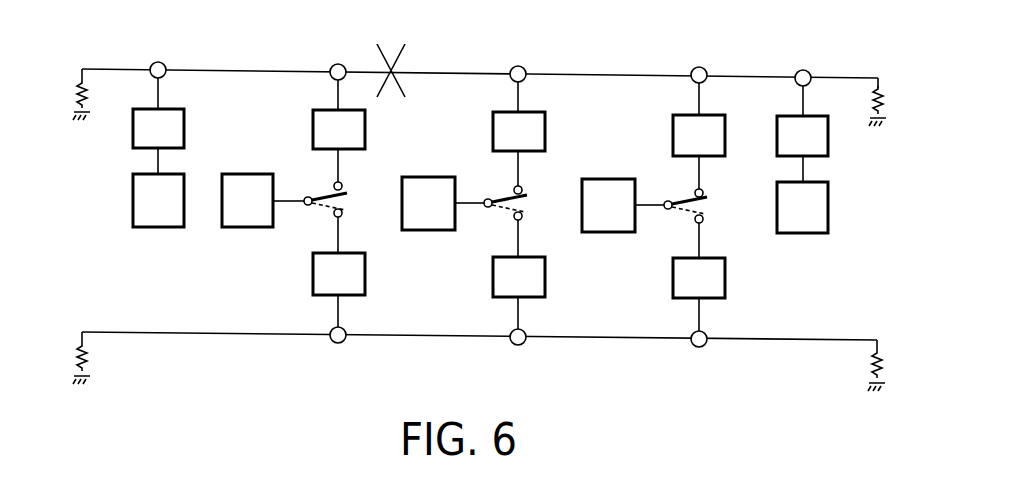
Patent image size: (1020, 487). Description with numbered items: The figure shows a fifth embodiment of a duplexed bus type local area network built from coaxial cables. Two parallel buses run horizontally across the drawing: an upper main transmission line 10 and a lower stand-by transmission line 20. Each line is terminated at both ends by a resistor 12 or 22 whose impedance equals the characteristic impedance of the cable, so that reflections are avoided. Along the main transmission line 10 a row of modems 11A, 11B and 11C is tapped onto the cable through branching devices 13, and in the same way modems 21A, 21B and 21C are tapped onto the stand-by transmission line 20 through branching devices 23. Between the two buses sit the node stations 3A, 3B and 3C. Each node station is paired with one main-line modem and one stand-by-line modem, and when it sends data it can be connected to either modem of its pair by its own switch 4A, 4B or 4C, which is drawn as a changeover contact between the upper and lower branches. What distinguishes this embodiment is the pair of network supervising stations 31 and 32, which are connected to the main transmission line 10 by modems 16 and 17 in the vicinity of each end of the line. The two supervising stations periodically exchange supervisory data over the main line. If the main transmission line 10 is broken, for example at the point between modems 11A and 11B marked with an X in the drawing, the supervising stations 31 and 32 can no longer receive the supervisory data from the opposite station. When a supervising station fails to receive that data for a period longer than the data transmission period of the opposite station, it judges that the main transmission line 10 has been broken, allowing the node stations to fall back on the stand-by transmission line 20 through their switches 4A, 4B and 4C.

The main transmission line 10 is at (235, 70).
The resistor 12 is at (870, 108).
The branching device 13 is at (712, 49).
The modem 16 is at (184, 130).
The modem 17 is at (828, 143).
The stand-by transmission line 20 is at (139, 333).
The resistor 22 is at (875, 365).
The branching device 23 is at (699, 347).
The network supervising station 31 is at (133, 217).
The network supervising station 32 is at (828, 222).
The modem 11A is at (365, 140).
The modem 11B is at (545, 131).
The modem 11C is at (725, 139).
The node station 3A is at (268, 152).
The node station 3B is at (443, 153).
The node station 3C is at (618, 155).
The switch 4A is at (328, 184).
The switch 4B is at (504, 187).
The switch 4C is at (688, 186).
The modem 21A is at (313, 295).
The modem 21B is at (493, 297).
The modem 21C is at (676, 298).